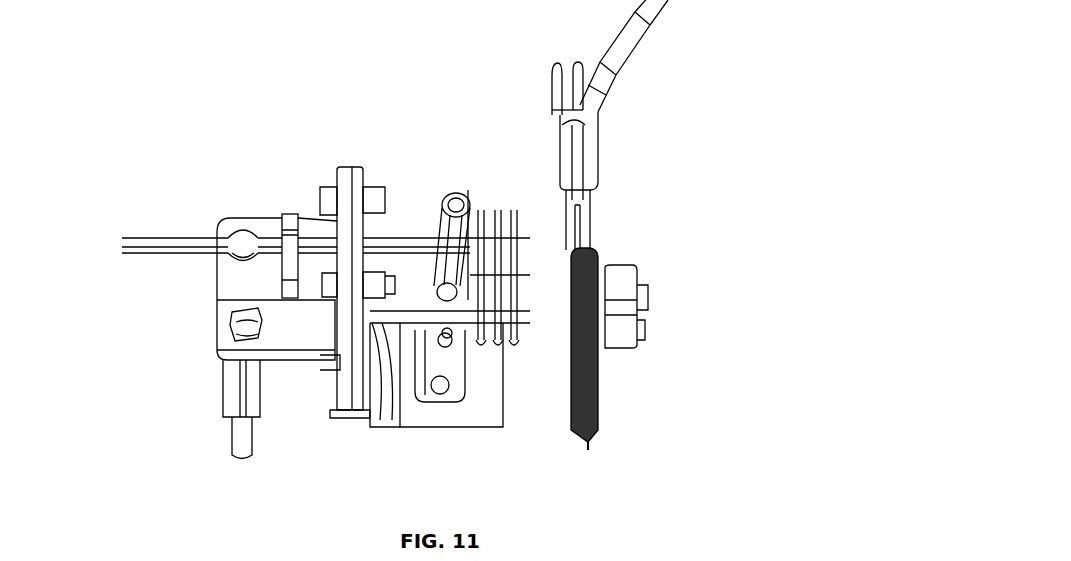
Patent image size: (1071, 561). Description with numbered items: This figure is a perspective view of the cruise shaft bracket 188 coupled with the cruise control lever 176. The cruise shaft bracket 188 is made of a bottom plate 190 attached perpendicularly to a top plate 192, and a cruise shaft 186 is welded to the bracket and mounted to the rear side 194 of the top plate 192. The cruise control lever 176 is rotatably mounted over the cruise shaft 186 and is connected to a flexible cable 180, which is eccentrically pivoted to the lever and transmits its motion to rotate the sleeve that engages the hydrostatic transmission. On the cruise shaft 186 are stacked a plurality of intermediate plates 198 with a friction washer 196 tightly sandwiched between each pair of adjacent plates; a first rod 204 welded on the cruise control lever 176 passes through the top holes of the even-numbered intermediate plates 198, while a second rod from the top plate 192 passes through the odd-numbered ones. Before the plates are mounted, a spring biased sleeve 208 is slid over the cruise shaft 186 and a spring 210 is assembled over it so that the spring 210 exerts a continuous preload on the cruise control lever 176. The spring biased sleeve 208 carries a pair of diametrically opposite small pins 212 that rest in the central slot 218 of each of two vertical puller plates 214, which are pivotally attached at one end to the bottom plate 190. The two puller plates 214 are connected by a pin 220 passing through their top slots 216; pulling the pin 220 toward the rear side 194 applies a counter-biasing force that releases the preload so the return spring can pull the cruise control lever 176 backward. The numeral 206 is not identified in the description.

The cruise control lever 176 is at (660, 30).
The flexible cable 180 is at (570, 152).
The cruise shaft 186 is at (542, 290).
The cruise shaft bracket 188 is at (330, 140).
The bottom plate 190 is at (422, 410).
The top plate 192 is at (335, 365).
The rear side 194 is at (366, 175).
The friction washers 196 is at (430, 337).
The intermediate plates 198 is at (505, 255).
The first rod 204 is at (540, 235).
The bracket flange 206 is at (387, 318).
The spring biased sleeve 208 is at (410, 304).
The spring 210 is at (400, 268).
The small pins 212 is at (447, 333).
The puller plates 214 is at (453, 307).
The top slot 216 is at (450, 290).
The central slot 218 is at (495, 305).
The pin 220 is at (440, 275).